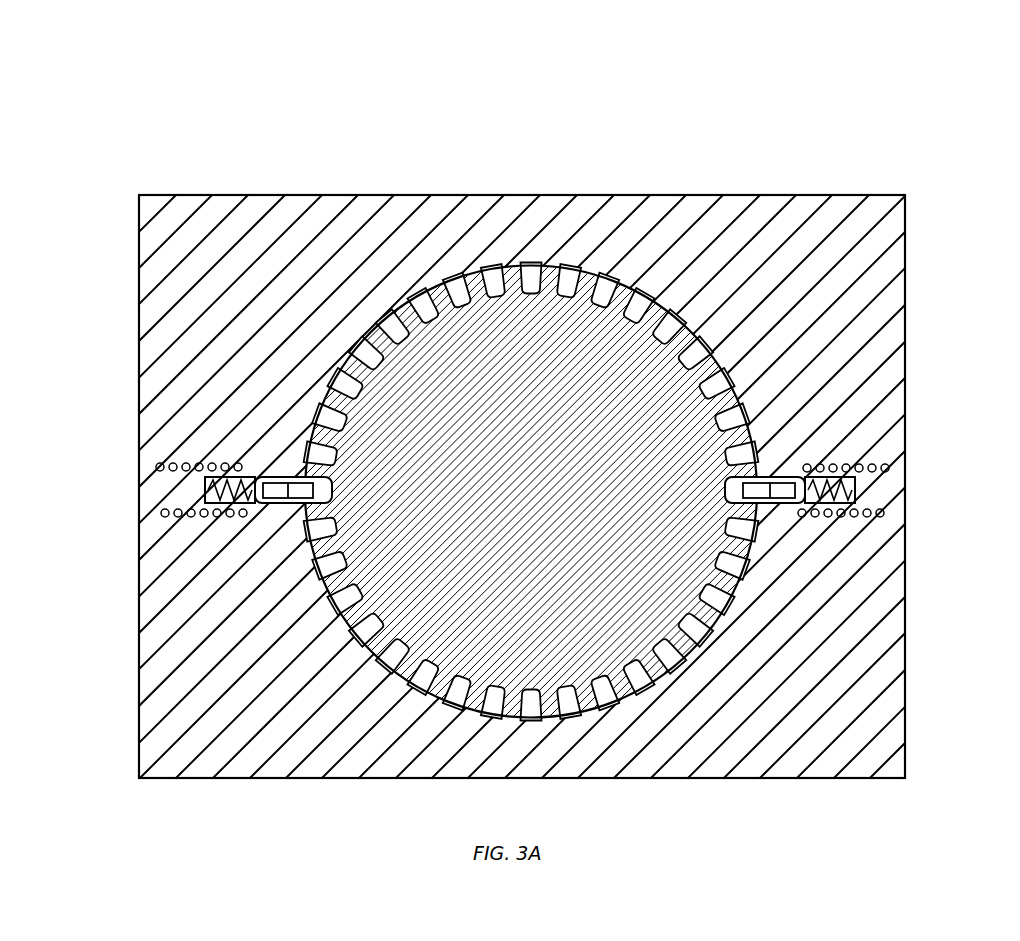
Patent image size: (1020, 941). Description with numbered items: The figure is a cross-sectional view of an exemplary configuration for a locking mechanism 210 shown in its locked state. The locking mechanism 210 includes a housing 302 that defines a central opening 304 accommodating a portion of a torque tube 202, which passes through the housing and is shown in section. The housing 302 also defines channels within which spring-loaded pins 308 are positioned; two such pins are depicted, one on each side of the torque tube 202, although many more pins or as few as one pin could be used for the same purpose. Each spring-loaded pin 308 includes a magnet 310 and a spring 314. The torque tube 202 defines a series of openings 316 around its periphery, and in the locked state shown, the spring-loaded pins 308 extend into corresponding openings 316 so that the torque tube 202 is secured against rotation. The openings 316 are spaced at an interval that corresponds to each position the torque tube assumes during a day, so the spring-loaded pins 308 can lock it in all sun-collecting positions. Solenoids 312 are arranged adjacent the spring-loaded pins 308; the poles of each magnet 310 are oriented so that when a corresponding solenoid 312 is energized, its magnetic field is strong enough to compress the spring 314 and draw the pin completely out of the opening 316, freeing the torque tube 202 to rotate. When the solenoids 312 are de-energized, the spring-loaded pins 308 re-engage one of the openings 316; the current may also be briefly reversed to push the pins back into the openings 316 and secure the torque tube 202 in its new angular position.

The locking mechanism 210 is at (134, 175).
The housing 302 is at (228, 253).
The opening 304 is at (394, 285).
The openings 316 is at (541, 262).
The torque tube 202 is at (550, 503).
The spring-loaded pins 308 is at (300, 476).
The magnet 310 is at (289, 505).
The spring 314 is at (245, 477).
The solenoids 312 is at (160, 464).